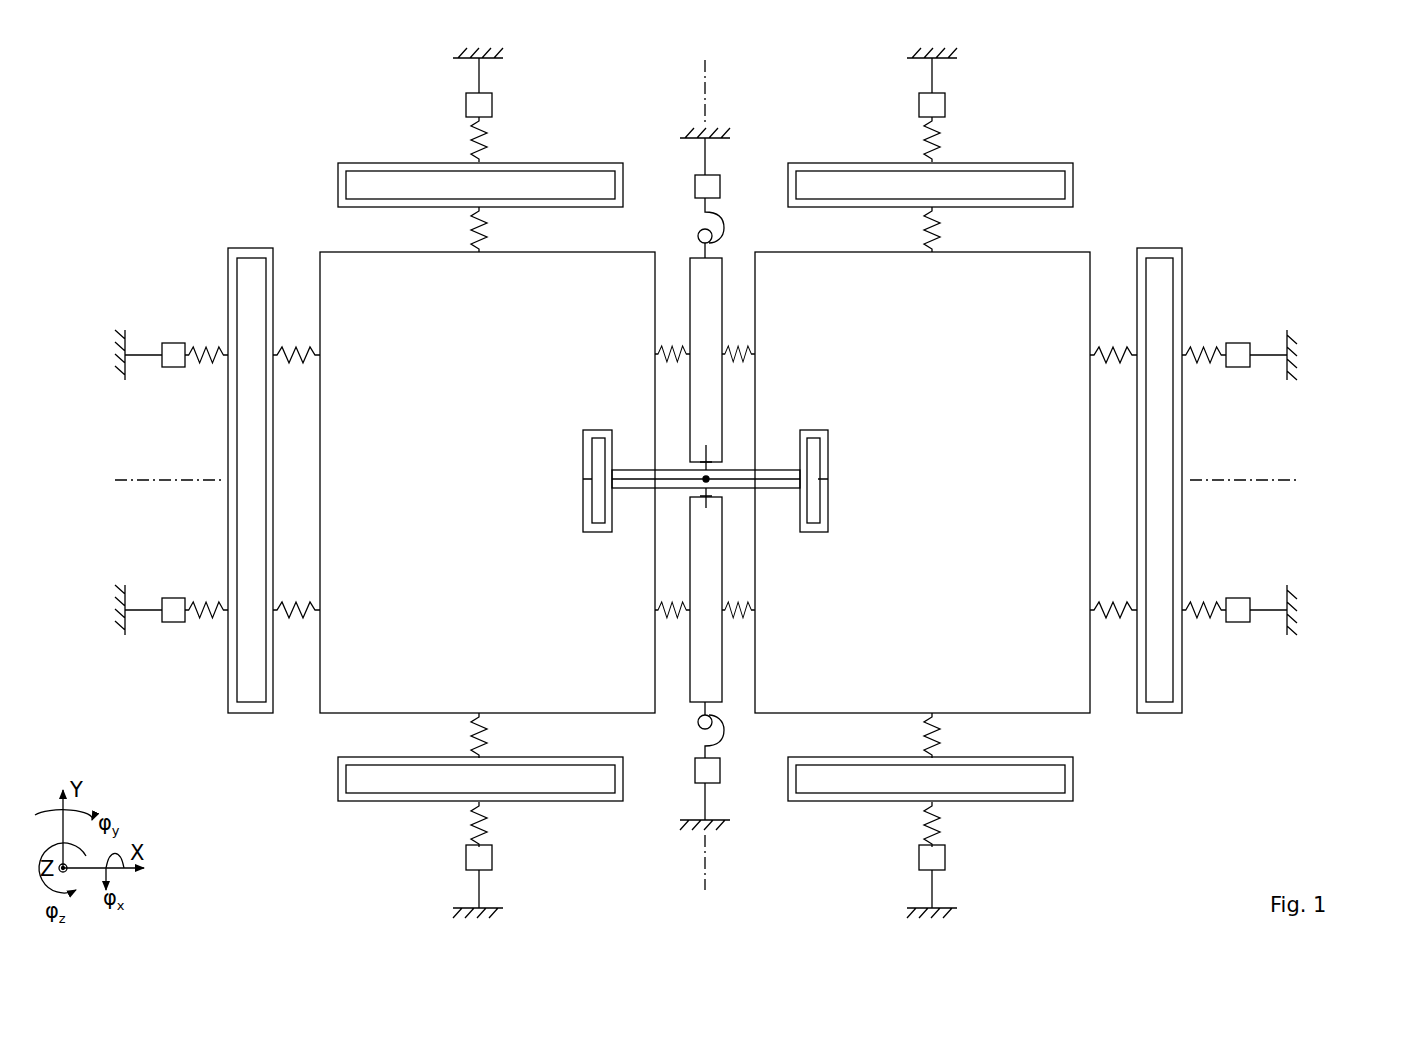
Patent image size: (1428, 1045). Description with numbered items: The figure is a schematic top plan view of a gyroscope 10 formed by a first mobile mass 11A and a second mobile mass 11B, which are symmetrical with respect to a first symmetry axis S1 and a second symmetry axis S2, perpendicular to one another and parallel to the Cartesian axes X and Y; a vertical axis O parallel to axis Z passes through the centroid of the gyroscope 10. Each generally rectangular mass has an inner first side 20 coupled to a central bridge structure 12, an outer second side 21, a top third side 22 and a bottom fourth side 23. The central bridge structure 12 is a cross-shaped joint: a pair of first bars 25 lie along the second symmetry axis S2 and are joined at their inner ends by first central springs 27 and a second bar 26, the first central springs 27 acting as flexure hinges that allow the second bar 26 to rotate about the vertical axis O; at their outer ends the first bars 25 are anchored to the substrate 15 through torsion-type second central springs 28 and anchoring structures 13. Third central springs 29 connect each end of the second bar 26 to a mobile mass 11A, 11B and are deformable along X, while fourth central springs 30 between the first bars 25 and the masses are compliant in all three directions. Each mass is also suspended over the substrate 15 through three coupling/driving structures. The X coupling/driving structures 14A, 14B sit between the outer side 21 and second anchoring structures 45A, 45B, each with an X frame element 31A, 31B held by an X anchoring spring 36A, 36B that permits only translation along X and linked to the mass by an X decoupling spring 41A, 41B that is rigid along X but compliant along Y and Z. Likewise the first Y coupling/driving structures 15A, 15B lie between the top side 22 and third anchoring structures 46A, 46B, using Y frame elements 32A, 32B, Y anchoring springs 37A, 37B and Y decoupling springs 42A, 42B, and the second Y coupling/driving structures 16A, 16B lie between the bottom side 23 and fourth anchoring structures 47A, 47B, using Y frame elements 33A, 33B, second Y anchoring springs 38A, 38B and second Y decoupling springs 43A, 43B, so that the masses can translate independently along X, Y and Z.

The gyroscope 10 is at (1300, 120).
The first mobile mass 11A is at (487, 482).
The second mobile mass 11B is at (922, 482).
The central bridge structure 12 is at (668, 230).
The anchoring structure 13 is at (720, 186).
The X coupling/driving structure 14A is at (232, 243).
The X coupling/driving structure 14B is at (1160, 728).
The substrate 15 is at (465, 60).
The first Y coupling/driving structure 15A is at (412, 130).
The first Y coupling/driving structure 15B is at (1050, 140).
The second Y coupling/driving structure 16A is at (595, 825).
The second Y coupling/driving structure 16B is at (980, 825).
The first side 20 is at (661, 268).
The second side 21 is at (324, 250).
The third side 22 is at (318, 292).
The fourth side 23 is at (323, 718).
The first bars 25 is at (713, 418).
The second bar 26 is at (680, 489).
The first central springs 27 is at (712, 462).
The second central springs 28 is at (697, 232).
The third central springs 29 is at (583, 492).
The fourth central springs 30 is at (675, 347).
The X frame element 31A is at (228, 433).
The X frame element 31B is at (1182, 508).
The Y frame element 32A is at (368, 165).
The Y frame element 32B is at (838, 165).
The Y frame element 33A is at (345, 803).
The Y frame element 33B is at (1008, 800).
The X anchoring spring 36A is at (210, 365).
The X anchoring spring 36B is at (1210, 345).
The Y anchoring spring 37A is at (490, 148).
The Y anchoring spring 37B is at (940, 148).
The second Y anchoring spring 38A is at (470, 817).
The second Y anchoring spring 38B is at (922, 817).
The X decoupling spring 41A is at (297, 345).
The X decoupling spring 41B is at (1117, 345).
The Y decoupling spring 42A is at (470, 232).
The Y decoupling spring 42B is at (925, 230).
The second Y decoupling spring 43A is at (470, 733).
The second Y decoupling spring 43B is at (922, 730).
The second anchoring structure 45A is at (168, 343).
The second anchoring structure 45B is at (1245, 343).
The third anchoring structure 46A is at (493, 108).
The third anchoring structure 46B is at (946, 108).
The fourth anchoring structure 47A is at (493, 860).
The fourth anchoring structure 47B is at (946, 860).
The vertical axis O is at (700, 478).
The first symmetry axis S1 is at (1228, 480).
The second symmetry axis S2 is at (708, 95).